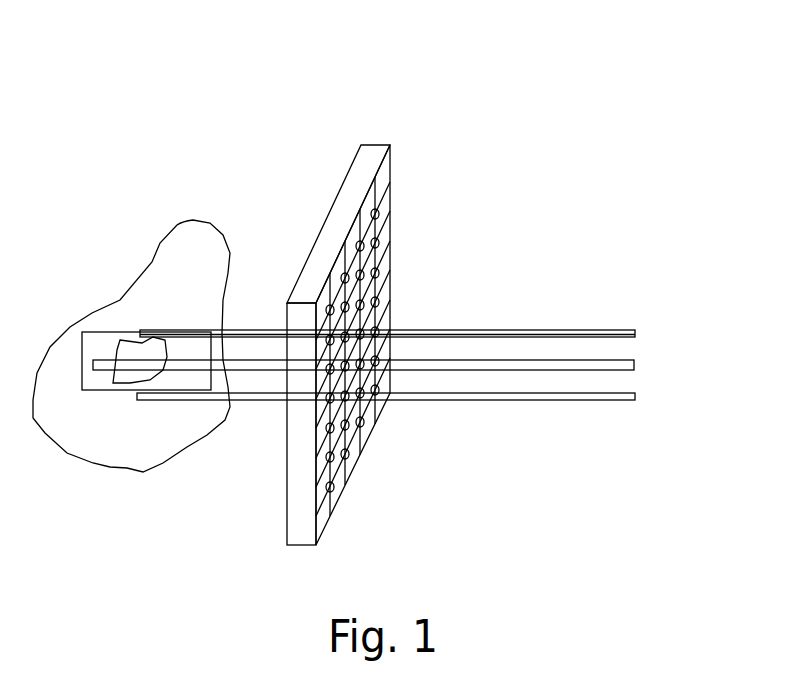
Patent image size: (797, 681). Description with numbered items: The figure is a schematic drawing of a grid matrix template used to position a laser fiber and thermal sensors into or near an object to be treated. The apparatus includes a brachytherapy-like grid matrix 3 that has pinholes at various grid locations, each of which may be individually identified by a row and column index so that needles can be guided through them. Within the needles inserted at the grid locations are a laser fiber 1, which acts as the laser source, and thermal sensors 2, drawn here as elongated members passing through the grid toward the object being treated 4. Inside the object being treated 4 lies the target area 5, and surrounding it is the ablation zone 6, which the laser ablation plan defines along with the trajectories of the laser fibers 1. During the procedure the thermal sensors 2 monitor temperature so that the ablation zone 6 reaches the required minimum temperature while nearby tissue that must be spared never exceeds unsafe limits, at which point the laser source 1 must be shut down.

The laser fiber 1 is at (738, 283).
The thermal sensor 2 is at (469, 366).
The grid matrix 3 is at (361, 114).
The object being treated 4 is at (186, 192).
The target area 5 is at (134, 307).
The ablation zone 6 is at (149, 418).